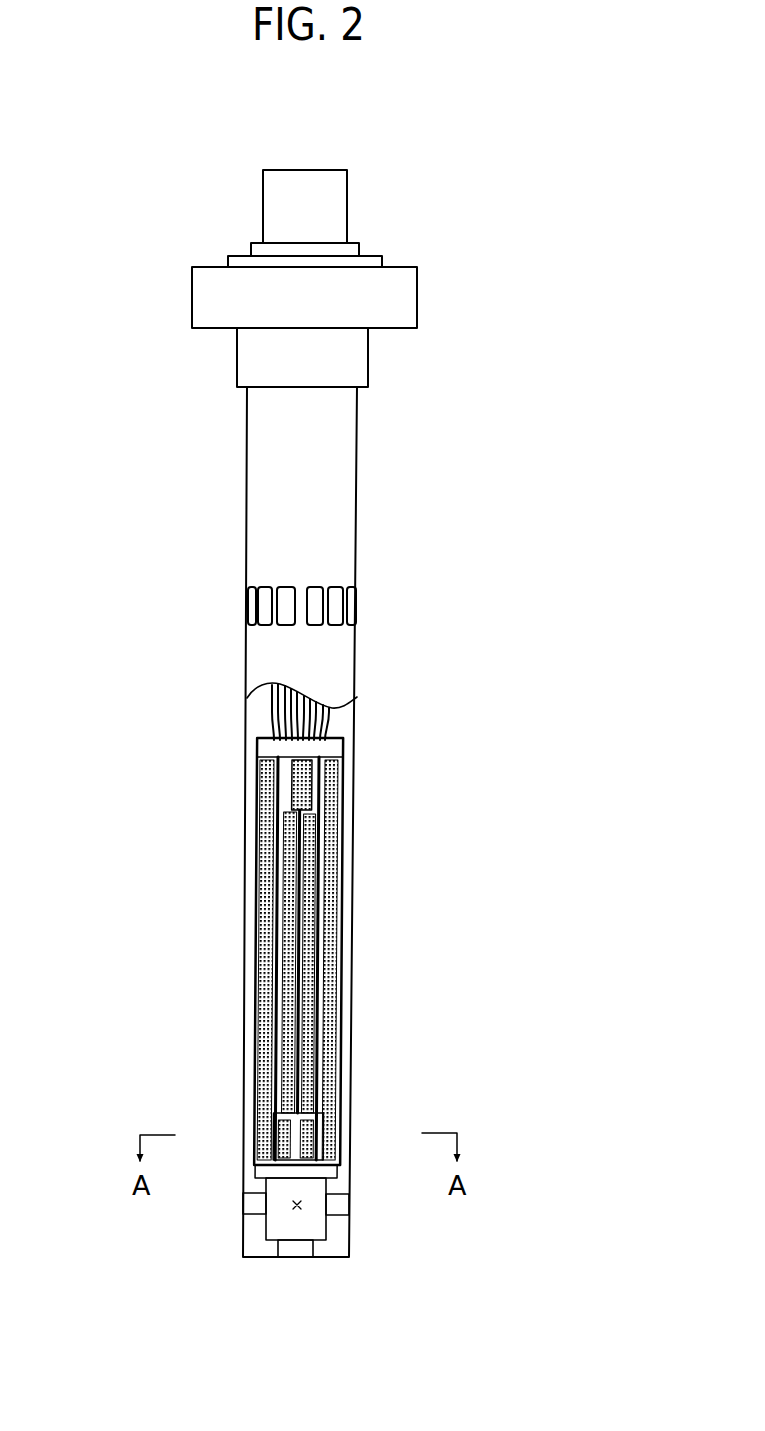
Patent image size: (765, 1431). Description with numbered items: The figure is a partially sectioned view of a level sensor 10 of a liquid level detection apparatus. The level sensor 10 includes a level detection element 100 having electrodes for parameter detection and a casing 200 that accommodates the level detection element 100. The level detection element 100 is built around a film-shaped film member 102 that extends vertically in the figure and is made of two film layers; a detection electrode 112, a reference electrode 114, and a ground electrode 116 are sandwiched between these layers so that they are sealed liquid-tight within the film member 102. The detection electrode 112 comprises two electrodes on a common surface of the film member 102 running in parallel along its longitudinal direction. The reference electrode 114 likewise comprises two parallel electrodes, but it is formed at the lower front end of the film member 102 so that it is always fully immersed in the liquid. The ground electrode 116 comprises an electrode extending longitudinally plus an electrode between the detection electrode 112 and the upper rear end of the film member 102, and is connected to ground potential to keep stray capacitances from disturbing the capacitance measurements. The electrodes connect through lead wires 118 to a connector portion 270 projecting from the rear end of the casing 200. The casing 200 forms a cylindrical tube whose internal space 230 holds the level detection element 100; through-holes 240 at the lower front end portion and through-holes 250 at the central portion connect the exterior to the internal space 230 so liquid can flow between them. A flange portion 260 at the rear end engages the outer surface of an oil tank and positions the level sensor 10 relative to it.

The level sensor 10 is at (142, 218).
The level detection element 100 is at (279, 1178).
The film member 102 is at (341, 800).
The detection electrode 112 is at (273, 1077).
The reference electrode 114 is at (282, 1124).
The ground electrode 116 is at (305, 775).
The lead wires 118 is at (268, 711).
The casing 200 is at (357, 485).
The internal space 230 is at (297, 1208).
The through-holes 240 is at (240, 1205).
The through-holes 250 is at (256, 571).
The flange portion 260 is at (417, 301).
The connector portion 270 is at (347, 197).